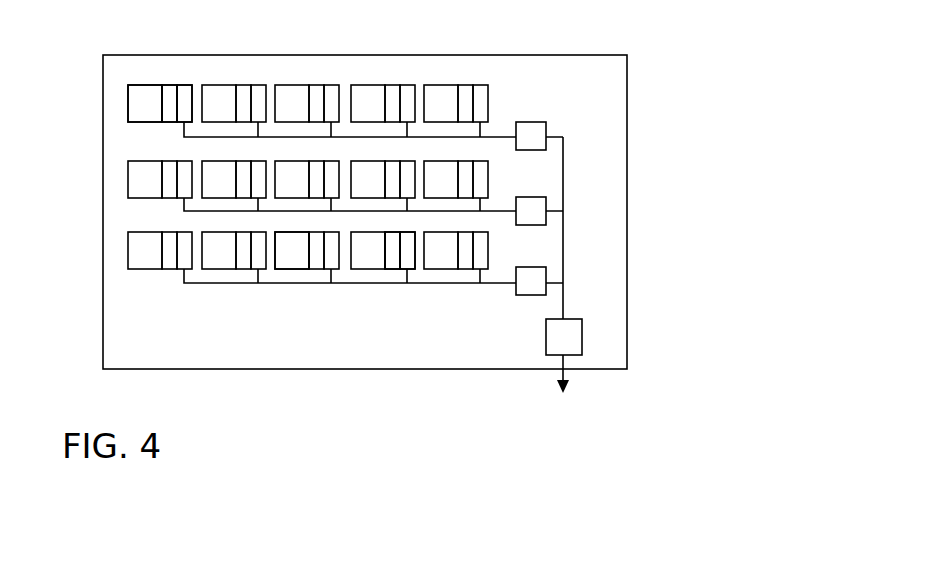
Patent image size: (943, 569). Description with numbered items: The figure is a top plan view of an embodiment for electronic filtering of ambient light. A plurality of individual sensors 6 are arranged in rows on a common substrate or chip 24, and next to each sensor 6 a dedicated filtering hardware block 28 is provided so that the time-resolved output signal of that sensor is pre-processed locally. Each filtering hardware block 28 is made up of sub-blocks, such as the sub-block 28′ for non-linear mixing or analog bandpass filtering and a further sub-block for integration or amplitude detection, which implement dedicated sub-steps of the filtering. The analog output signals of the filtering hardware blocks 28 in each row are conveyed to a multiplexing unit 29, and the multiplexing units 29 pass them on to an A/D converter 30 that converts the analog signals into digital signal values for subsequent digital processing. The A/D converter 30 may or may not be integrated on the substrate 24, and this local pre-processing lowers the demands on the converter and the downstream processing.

The sensor 6 is at (145, 92).
The substrate 24 is at (612, 92).
The filtering hardware block 28 is at (193, 77).
The sub-block 28′ is at (168, 115).
The multiplexing unit 29 is at (537, 128).
The A/D converter 30 is at (572, 337).